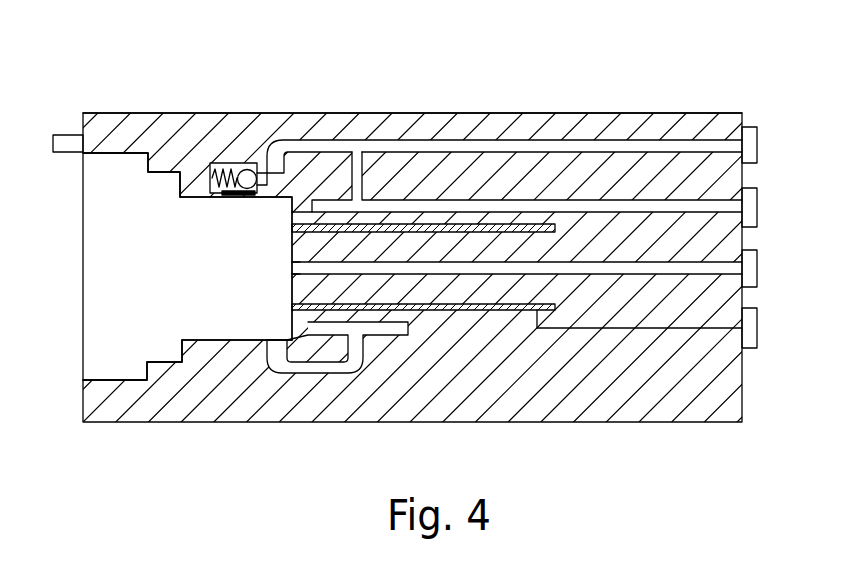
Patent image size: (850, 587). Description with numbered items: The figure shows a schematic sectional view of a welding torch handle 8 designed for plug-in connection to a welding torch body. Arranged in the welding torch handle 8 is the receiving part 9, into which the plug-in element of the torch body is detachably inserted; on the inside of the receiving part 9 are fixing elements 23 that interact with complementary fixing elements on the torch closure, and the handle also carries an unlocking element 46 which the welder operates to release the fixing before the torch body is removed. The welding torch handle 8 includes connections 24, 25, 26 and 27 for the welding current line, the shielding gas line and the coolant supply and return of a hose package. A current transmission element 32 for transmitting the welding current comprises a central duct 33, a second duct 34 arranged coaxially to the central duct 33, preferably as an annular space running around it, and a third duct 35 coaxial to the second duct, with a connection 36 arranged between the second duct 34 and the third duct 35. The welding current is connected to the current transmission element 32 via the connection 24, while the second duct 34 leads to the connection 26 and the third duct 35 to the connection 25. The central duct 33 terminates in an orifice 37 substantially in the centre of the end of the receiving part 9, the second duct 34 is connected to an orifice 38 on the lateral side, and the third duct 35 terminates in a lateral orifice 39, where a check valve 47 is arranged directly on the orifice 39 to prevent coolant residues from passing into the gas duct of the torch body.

The welding torch handle 8 is at (653, 453).
The receiving part 9 is at (183, 308).
The fixing elements 23 is at (110, 165).
The connection 24 is at (757, 328).
The connection 25 is at (757, 147).
The connection 26 is at (757, 204).
The connection 27 is at (757, 268).
The current transmission element 32 is at (445, 228).
The central duct 33 is at (457, 267).
The second duct 34 is at (635, 207).
The third duct 35 is at (567, 145).
The connection 36 is at (357, 178).
The orifice 37 is at (278, 264).
The orifice 38 is at (266, 331).
The orifice 39 is at (208, 204).
The unlocking element 46 is at (67, 147).
The check valve 47 is at (235, 167).